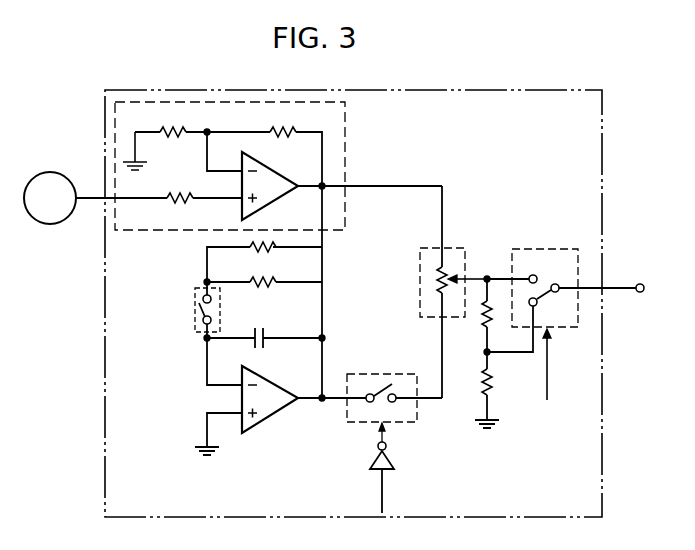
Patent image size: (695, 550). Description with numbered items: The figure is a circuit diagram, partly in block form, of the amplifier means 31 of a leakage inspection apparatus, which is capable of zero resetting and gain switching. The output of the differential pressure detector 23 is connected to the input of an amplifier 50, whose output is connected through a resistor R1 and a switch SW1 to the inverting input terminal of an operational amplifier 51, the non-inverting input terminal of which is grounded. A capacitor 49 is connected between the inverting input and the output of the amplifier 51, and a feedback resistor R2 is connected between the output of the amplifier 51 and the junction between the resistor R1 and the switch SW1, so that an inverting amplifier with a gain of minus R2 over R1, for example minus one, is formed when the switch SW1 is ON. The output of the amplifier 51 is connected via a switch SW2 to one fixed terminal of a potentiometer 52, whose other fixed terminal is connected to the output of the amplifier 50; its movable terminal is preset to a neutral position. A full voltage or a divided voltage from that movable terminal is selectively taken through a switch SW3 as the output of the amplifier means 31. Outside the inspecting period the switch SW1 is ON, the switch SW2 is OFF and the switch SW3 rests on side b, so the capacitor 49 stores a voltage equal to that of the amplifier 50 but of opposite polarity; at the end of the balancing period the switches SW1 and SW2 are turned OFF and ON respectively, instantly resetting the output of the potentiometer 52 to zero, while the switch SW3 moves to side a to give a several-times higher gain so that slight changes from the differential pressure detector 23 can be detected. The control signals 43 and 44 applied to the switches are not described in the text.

The differential pressure detector 23 is at (62, 170).
The amplifier means 31 is at (495, 87).
The control signal 43 is at (193, 309).
The control signal 44 is at (555, 352).
The capacitor 49 is at (268, 326).
The amplifier 50 is at (345, 132).
The operational amplifier 51 is at (270, 420).
The potentiometer 52 is at (460, 240).
The resistor R1 is at (268, 254).
The feedback resistor R2 is at (262, 290).
The switch SW1 is at (182, 317).
The switch SW2 is at (394, 384).
The switch SW3 is at (565, 280).